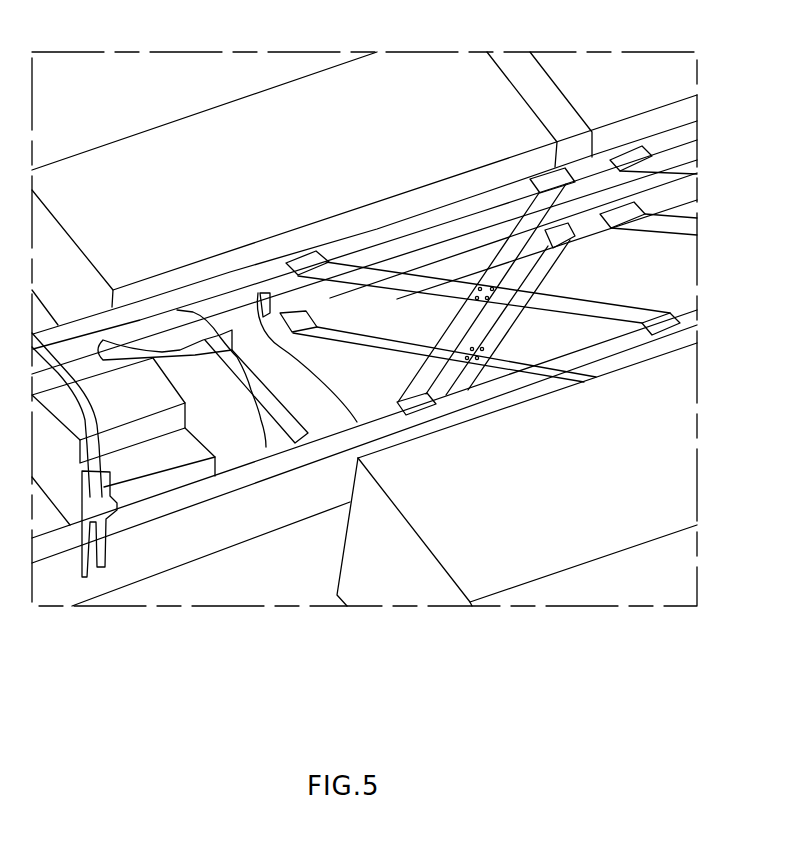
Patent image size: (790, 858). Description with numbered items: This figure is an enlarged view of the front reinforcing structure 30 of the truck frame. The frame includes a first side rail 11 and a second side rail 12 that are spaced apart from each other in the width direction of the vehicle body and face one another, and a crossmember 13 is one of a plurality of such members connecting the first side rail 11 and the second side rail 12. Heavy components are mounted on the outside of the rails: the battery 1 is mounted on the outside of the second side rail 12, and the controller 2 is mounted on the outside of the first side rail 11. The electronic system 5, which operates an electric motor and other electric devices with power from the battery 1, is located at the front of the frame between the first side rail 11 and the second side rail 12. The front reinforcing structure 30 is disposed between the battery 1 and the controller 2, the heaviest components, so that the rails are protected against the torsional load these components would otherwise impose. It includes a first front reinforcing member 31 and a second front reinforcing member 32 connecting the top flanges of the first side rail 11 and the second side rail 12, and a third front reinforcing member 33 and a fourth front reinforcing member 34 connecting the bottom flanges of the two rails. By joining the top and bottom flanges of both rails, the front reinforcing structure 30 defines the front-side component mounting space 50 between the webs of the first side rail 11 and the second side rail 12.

The battery 1 is at (252, 118).
The controller 2 is at (682, 437).
The electronic system 5 is at (172, 458).
The first side rail 11 is at (270, 497).
The second side rail 12 is at (510, 183).
The crossmember 13 is at (250, 393).
The front reinforcing structure 30 is at (556, 284).
The first front reinforcing member 31 is at (447, 326).
The second front reinforcing member 32 is at (598, 307).
The third front reinforcing member 33 is at (497, 323).
The fourth front reinforcing member 34 is at (343, 338).
The front-side component mounting space 50 is at (462, 322).